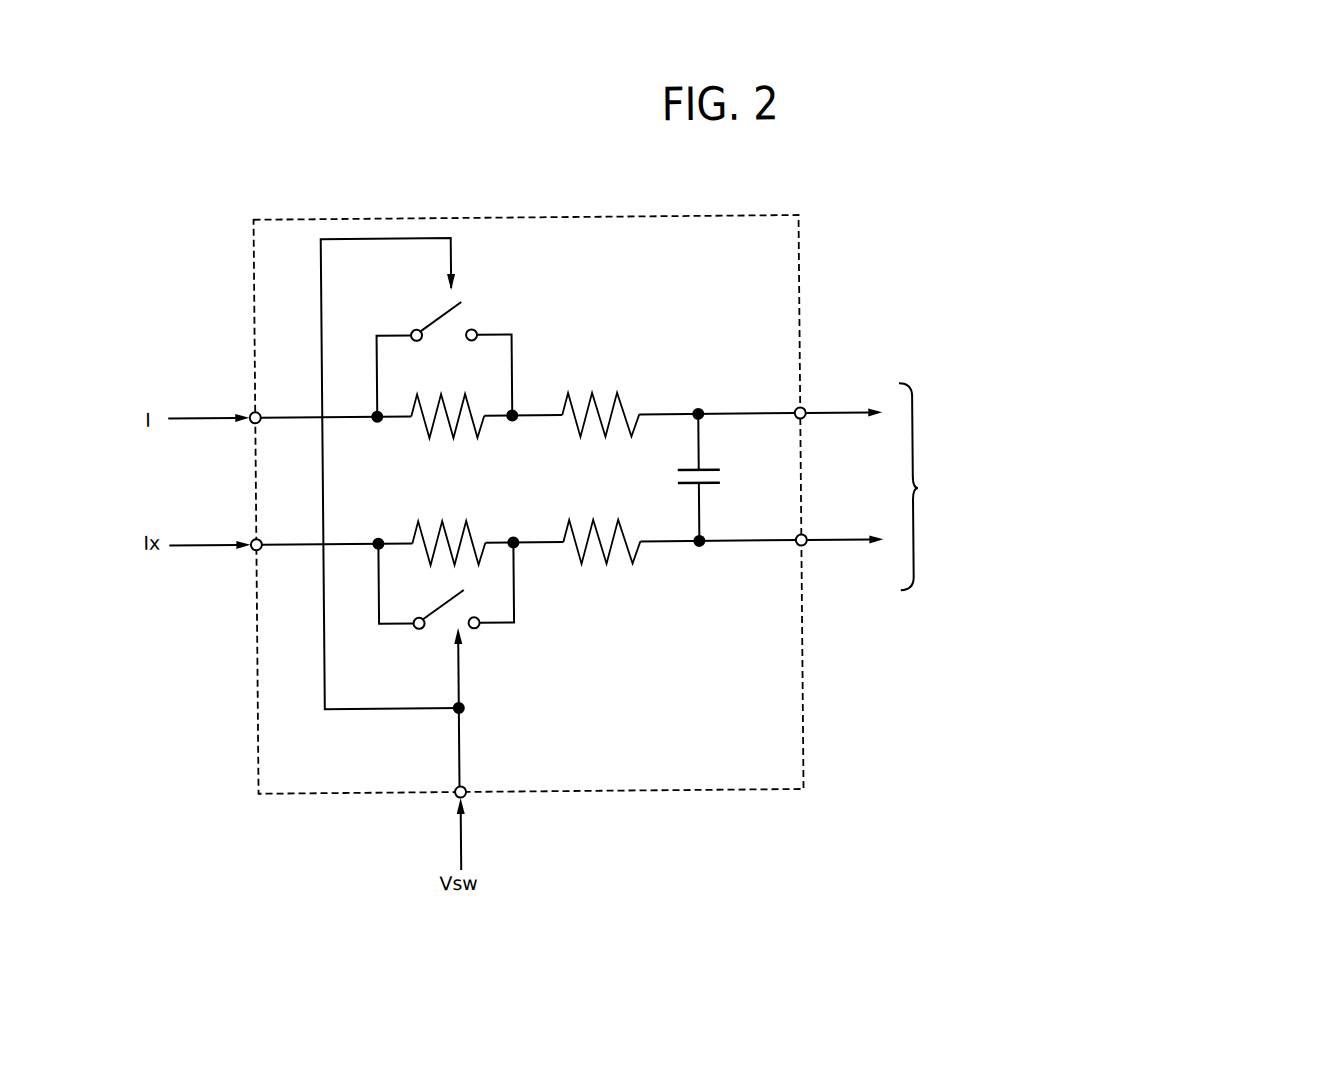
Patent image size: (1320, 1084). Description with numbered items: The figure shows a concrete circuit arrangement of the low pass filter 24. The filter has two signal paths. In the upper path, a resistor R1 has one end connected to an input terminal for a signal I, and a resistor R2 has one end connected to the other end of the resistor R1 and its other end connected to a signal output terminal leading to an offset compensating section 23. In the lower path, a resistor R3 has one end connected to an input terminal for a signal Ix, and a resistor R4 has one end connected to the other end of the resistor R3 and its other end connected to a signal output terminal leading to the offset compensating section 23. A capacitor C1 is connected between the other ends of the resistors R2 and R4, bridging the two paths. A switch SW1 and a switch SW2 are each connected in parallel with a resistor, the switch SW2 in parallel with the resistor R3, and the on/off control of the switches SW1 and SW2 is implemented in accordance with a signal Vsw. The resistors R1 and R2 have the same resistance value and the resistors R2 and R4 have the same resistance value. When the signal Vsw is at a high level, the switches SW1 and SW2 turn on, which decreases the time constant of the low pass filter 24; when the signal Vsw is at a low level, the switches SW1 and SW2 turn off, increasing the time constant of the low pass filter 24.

The low pass filter 24 is at (452, 218).
The offset compensating section 23 is at (1095, 485).
The resistor R1 is at (455, 428).
The resistor R2 is at (607, 428).
The resistor R3 is at (442, 528).
The resistor R4 is at (597, 528).
The capacitor C1 is at (722, 481).
The switch SW1 is at (442, 318).
The switch SW2 is at (441, 617).